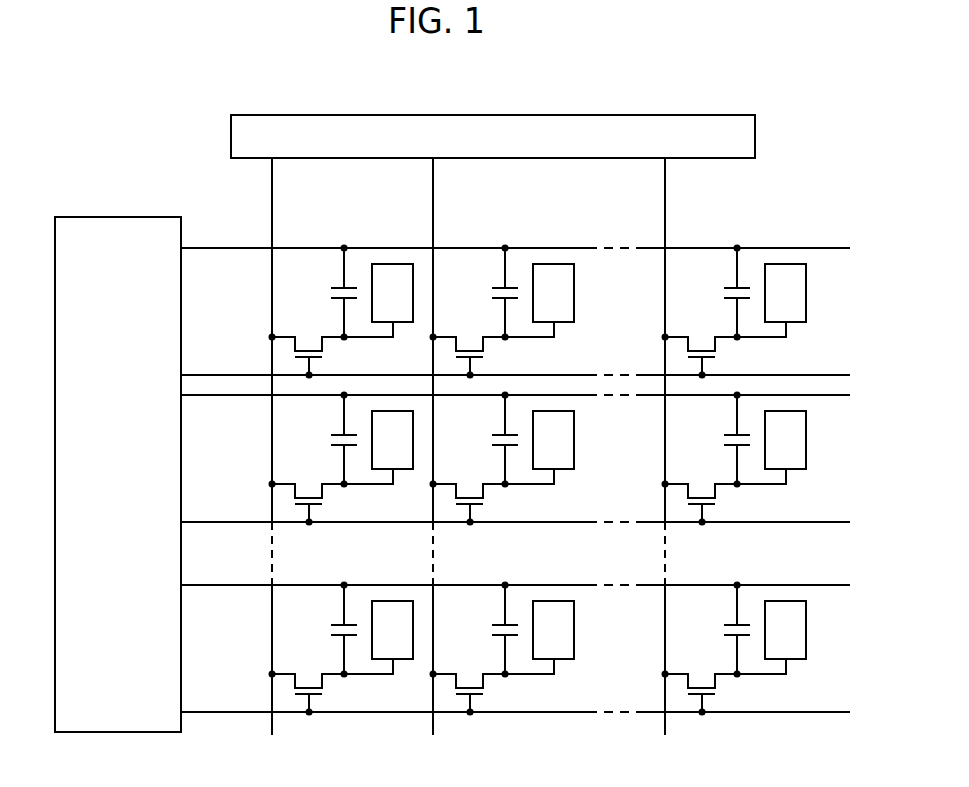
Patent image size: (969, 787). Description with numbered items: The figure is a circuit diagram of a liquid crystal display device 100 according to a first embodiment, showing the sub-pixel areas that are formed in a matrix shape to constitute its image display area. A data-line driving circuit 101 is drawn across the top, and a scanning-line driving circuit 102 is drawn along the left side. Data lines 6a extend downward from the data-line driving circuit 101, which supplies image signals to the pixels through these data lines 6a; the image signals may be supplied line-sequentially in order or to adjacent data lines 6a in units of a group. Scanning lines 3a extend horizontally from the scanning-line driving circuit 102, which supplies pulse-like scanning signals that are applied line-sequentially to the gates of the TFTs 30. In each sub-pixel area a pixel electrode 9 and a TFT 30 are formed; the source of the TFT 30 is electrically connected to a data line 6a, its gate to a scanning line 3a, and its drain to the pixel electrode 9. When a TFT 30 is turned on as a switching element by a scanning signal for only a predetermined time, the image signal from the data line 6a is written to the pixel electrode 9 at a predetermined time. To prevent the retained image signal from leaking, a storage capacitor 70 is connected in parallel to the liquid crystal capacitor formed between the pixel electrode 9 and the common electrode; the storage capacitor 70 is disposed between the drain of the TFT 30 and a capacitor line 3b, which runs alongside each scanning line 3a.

The liquid crystal display device 100 is at (810, 212).
The data-line driving circuit 101 is at (231, 138).
The scanning-line driving circuit 102 is at (120, 222).
The scanning line 3a is at (258, 374).
The capacitor line 3b is at (258, 247).
The data line 6a is at (274, 240).
The pixel electrode 9 is at (397, 270).
The TFT 30 is at (323, 355).
The storage capacitor 70 is at (327, 292).